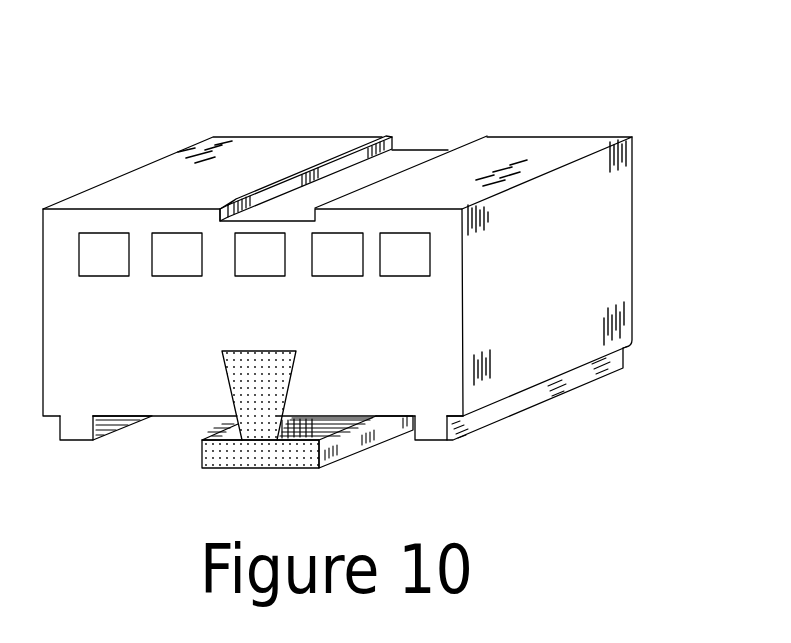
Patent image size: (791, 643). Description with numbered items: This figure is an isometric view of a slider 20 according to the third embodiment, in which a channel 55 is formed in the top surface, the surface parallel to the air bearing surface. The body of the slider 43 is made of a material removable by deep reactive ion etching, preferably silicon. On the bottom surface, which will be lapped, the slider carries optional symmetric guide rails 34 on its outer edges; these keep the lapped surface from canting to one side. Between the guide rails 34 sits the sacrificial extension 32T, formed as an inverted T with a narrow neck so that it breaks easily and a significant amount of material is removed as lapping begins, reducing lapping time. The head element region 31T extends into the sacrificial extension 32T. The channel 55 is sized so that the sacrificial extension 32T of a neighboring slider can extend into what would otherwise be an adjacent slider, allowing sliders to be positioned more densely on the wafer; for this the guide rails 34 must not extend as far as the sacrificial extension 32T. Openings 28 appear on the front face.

The slider 20 is at (212, 97).
The channel 55 is at (395, 162).
The contact windows 28 is at (105, 263).
The terminal tab 31T is at (280, 363).
The sacrificial extension 32T is at (342, 447).
The body of the slider 43 is at (430, 388).
The guide rails 34 is at (77, 430).